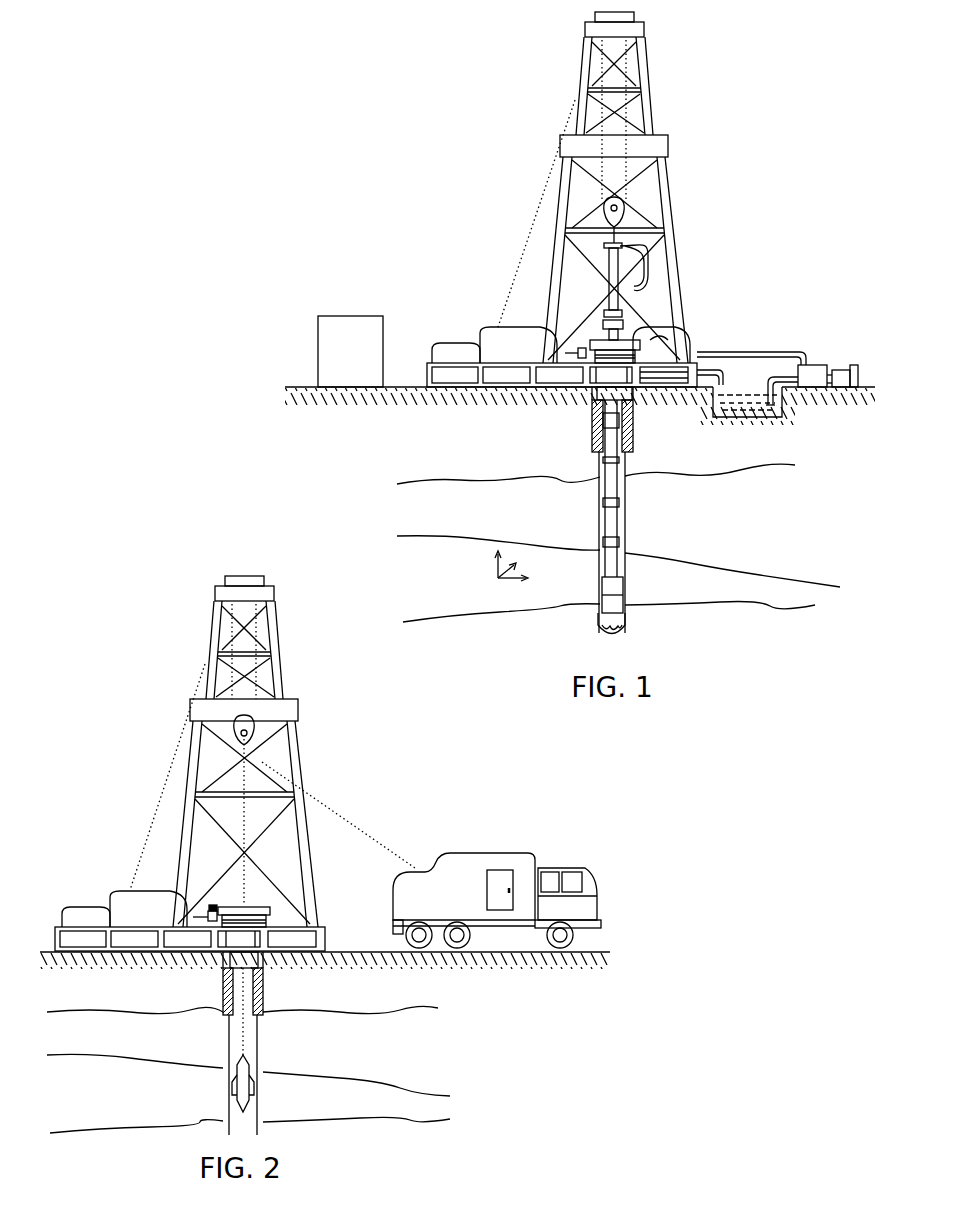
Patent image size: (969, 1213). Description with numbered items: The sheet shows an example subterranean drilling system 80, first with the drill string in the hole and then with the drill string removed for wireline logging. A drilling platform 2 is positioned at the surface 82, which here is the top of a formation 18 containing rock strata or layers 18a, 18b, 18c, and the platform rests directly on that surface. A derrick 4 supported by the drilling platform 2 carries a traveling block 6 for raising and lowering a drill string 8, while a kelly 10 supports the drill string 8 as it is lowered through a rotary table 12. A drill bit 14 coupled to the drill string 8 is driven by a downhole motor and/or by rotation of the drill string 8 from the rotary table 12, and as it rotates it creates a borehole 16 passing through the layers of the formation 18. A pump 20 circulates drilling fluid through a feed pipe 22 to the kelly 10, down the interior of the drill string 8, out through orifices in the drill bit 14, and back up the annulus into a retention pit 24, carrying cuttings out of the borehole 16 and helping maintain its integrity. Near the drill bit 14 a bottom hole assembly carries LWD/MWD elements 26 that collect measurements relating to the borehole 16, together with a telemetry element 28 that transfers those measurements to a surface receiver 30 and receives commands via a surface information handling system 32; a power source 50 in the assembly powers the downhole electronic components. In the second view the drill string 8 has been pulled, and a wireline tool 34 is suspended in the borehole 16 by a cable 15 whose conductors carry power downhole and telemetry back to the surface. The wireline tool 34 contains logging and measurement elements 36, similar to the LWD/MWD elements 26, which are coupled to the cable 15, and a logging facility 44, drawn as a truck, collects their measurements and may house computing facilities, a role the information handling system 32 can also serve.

In FIG. 1, the drilling platform 2 is at (427, 372).
In FIG. 2, the drilling platform 2 is at (326, 940).
In FIG. 1, the derrick 4 is at (658, 112).
In FIG. 2, the derrick 4 is at (308, 846).
In FIG. 1, the traveling block 6 is at (622, 212).
In FIG. 2, the traveling block 6 is at (256, 735).
In FIG. 1, the drill string 8 is at (614, 470).
In FIG. 1, the kelly 10 is at (613, 265).
In FIG. 1, the rotary table 12 is at (640, 345).
In FIG. 2, the rotary table 12 is at (255, 905).
In FIG. 1, the drill bit 14 is at (627, 630).
In FIG. 2, the cable 15 is at (240, 992).
In FIG. 1, the borehole 16 is at (628, 478).
In FIG. 2, the borehole 16 is at (248, 1033).
In FIG. 1, the formation 18 is at (413, 428).
In FIG. 2, the formation 18 is at (560, 1005).
In FIG. 1, the rock stratum 18a is at (430, 570).
In FIG. 2, the rock stratum 18a is at (424, 1001).
In FIG. 1, the rock stratum 18b is at (596, 491).
In FIG. 2, the rock stratum 18b is at (46, 1046).
In FIG. 1, the rock stratum 18c is at (743, 468).
In FIG. 2, the rock stratum 18c is at (46, 1121).
In FIG. 1, the pump 20 is at (812, 364).
In FIG. 1, the feed pipe 22 is at (745, 352).
In FIG. 1, the retention pit 24 is at (752, 405).
In FIG. 1, the LWD/MWD elements 26 is at (605, 600).
In FIG. 1, the telemetry element 28 is at (623, 583).
In FIG. 1, the surface receiver 30 is at (620, 318).
In FIG. 1, the surface information handling system 32 is at (336, 363).
In FIG. 2, the wireline tool 34 is at (236, 1073).
In FIG. 2, the logging and measurement elements 36 is at (234, 1085).
In FIG. 2, the logging facility 44 is at (470, 852).
In FIG. 1, the power source 50 is at (492, 577).
In FIG. 1, the subterranean drilling system 80 is at (755, 155).
In FIG. 1, the surface 82 is at (300, 387).
In FIG. 2, the surface 82 is at (45, 950).